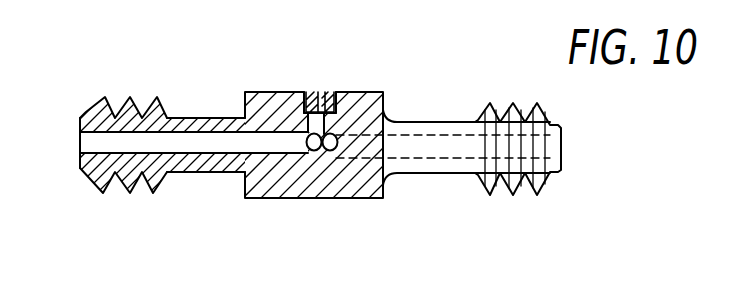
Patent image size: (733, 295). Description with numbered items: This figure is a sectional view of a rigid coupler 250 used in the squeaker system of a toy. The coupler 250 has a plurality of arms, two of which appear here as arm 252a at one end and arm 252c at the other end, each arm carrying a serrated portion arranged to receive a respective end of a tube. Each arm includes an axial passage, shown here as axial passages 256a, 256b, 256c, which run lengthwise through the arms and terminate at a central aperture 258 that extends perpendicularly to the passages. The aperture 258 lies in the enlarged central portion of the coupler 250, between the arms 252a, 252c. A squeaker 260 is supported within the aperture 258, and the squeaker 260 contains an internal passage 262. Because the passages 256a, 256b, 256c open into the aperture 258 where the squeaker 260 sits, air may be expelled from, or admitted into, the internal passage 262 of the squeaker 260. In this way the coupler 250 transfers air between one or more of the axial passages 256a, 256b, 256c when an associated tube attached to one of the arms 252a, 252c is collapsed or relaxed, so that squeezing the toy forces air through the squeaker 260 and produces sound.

The rigid coupler 250 is at (262, 203).
The arm 252a is at (80, 168).
The arm 252c is at (558, 171).
The axial passage 256a is at (176, 138).
The axial passage 256b is at (316, 150).
The axial passage 256c is at (331, 150).
The central aperture 258 is at (362, 123).
The squeaker 260 is at (298, 92).
The internal passage 262 is at (326, 90).